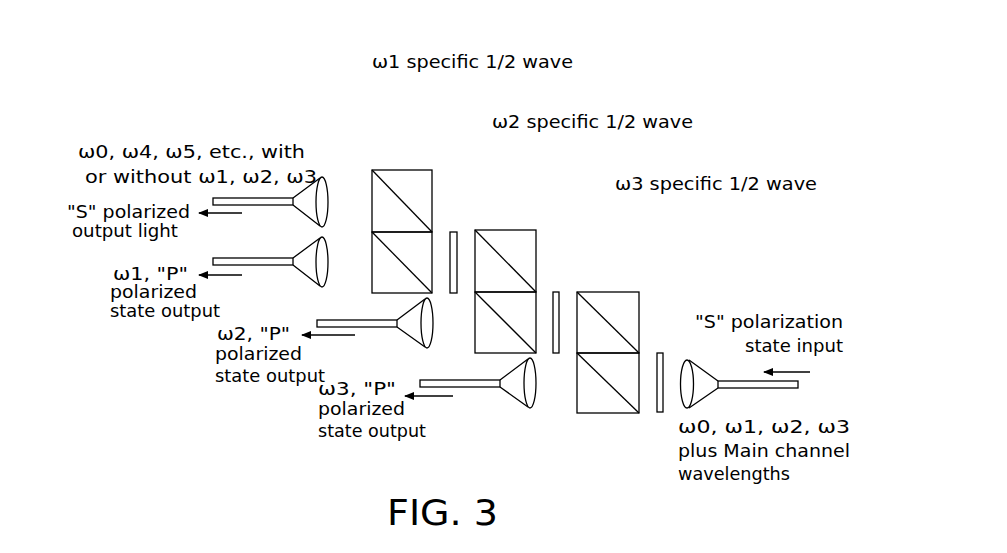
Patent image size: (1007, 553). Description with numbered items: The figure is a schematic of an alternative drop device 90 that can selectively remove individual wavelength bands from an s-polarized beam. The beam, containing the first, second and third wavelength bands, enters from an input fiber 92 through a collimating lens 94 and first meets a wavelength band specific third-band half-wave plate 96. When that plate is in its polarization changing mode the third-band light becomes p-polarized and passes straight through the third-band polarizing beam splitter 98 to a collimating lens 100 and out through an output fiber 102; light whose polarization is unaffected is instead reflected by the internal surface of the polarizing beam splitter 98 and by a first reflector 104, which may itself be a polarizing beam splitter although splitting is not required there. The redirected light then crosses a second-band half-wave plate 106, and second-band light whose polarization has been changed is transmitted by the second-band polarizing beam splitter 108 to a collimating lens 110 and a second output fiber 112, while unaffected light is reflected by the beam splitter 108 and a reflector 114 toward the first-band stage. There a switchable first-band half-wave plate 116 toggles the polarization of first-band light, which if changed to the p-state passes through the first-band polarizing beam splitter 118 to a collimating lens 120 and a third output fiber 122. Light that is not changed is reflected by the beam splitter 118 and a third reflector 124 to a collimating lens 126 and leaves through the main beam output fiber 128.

The drop device 90 is at (222, 96).
The input fiber 92 is at (728, 373).
The collimating lens 94 is at (683, 407).
The ω3 half-wave plate 96 is at (661, 353).
The ω3 polarizing beam splitter 98 is at (592, 413).
The collimating lens 100 is at (532, 393).
The output fiber 102 is at (460, 387).
The first reflector 104 is at (597, 292).
The ω2 half-wave plate 106 is at (557, 292).
The ω2 polarizing beam splitter 108 is at (488, 353).
The collimating lens 110 is at (429, 311).
The second output fiber 112 is at (357, 327).
The reflector 114 is at (493, 231).
The ω1 half-wave plate 116 is at (453, 230).
The ω1 polarizing beam splitter 118 is at (375, 293).
The collimating lens 120 is at (324, 254).
The third output fiber 122 is at (252, 265).
The third reflector 124 is at (383, 170).
The collimating lens 126 is at (323, 190).
The main beam output fiber 128 is at (252, 205).